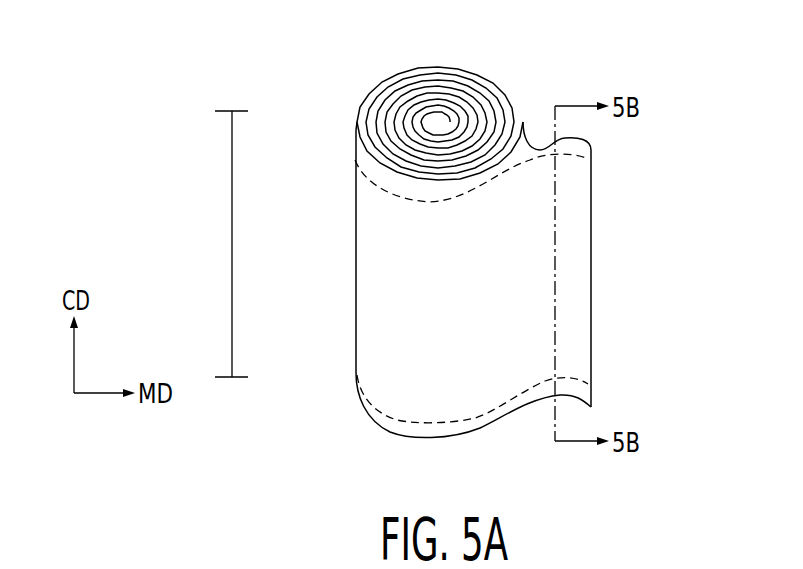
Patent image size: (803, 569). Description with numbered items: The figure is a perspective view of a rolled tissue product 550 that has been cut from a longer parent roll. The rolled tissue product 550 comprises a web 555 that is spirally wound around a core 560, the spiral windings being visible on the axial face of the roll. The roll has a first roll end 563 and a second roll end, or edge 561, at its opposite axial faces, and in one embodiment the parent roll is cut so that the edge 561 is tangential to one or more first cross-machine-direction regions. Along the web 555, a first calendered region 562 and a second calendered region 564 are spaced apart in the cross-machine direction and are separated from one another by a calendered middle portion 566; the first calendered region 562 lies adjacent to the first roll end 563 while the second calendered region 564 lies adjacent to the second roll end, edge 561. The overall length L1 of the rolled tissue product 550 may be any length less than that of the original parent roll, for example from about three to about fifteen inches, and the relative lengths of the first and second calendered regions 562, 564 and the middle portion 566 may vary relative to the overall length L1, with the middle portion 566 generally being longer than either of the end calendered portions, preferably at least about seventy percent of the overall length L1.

The rolled tissue product 550 is at (399, 52).
The web 555 is at (580, 277).
The core 560 is at (440, 122).
The edge 561 is at (466, 447).
The first calendered region 562 is at (393, 185).
The first roll end 563 is at (339, 98).
The second calendered region 564 is at (395, 422).
The calendered middle portion 566 is at (370, 265).
The length L1 is at (232, 256).